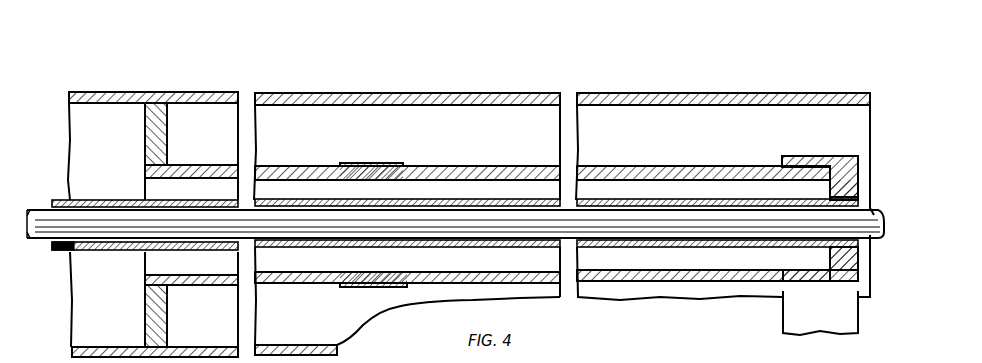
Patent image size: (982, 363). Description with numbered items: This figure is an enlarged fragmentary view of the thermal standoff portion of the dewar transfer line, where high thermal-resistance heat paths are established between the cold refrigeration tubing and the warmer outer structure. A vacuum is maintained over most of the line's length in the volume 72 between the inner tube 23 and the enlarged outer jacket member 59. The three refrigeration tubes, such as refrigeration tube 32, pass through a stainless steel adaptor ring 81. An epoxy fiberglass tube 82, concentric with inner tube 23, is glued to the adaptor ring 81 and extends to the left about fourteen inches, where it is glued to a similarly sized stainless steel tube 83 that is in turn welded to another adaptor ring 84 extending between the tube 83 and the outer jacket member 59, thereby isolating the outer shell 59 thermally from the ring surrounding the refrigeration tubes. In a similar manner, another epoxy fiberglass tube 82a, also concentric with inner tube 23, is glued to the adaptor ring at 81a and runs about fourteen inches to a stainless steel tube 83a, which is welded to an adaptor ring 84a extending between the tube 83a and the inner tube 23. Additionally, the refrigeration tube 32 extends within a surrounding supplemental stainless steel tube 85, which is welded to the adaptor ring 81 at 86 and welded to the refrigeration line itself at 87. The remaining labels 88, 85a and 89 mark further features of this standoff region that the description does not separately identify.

The outer jacket member 59 is at (100, 92).
The adaptor ring 84 is at (144, 122).
The adaptor ring 84a is at (146, 320).
The inner tube 23 is at (223, 347).
The supplemental stainless steel tube 85 is at (110, 200).
The weld 87 is at (76, 251).
The volume 72 is at (480, 141).
The stainless steel tube 83 is at (392, 163).
The stainless steel tube 83a is at (378, 285).
The bushing 88 is at (430, 208).
The adaptor ring 81 is at (858, 170).
The adaptor ring gluing location 81a is at (792, 300).
The weld 86 is at (858, 196).
The seal 89 is at (858, 248).
The epoxy fiberglass tube 82 is at (632, 167).
The epoxy fiberglass tube 82a is at (636, 281).
The bearing sleeve 85a is at (662, 247).
The refrigeration tube 32 is at (884, 228).